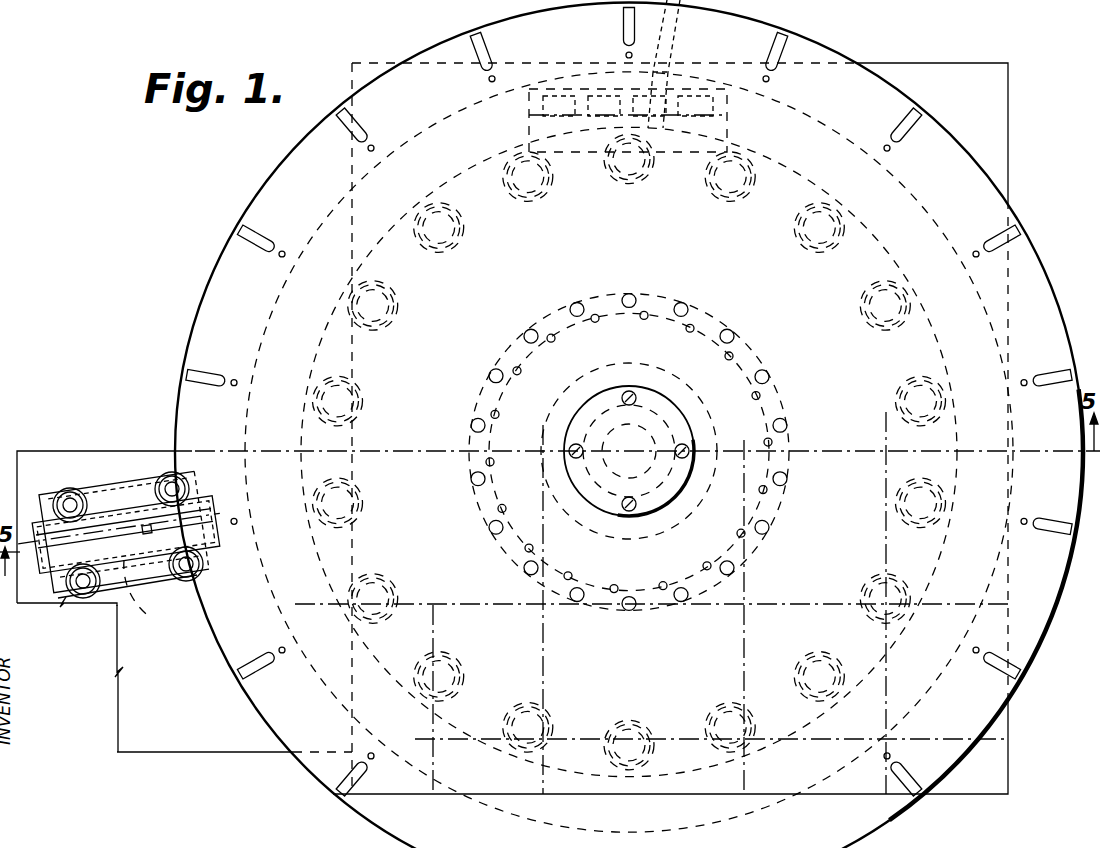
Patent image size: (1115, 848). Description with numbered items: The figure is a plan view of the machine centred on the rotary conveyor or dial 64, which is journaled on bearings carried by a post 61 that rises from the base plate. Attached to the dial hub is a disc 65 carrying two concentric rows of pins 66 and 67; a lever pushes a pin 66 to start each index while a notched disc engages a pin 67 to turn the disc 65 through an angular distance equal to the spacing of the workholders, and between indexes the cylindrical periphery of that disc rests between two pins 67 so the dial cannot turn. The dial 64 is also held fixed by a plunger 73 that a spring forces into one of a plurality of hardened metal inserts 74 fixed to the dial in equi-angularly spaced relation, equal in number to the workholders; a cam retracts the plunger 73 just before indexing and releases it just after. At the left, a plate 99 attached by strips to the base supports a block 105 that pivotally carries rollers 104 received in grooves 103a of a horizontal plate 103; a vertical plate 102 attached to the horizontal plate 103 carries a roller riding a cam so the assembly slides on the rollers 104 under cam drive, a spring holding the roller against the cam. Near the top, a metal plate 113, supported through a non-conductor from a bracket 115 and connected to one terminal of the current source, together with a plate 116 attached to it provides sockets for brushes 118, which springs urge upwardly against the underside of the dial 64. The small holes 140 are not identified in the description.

The dial 64 is at (257, 191).
The locating holes 140 is at (265, 240).
The metal plate 113 is at (672, 97).
The bracket 115 is at (529, 131).
The plate 116 is at (727, 130).
The brushes 118 is at (700, 111).
The plunger 73 is at (453, 241).
The inserts 74 is at (541, 198).
The post 61 is at (641, 440).
The disc 65 is at (486, 508).
The pins 66 is at (493, 470).
The pins 67 is at (500, 541).
The plate 99 is at (29, 451).
The vertical plate 102 is at (172, 533).
The horizontal plate 103 is at (125, 518).
The grooves 103a is at (161, 600).
The rollers 104 is at (66, 489).
The block 105 is at (149, 577).